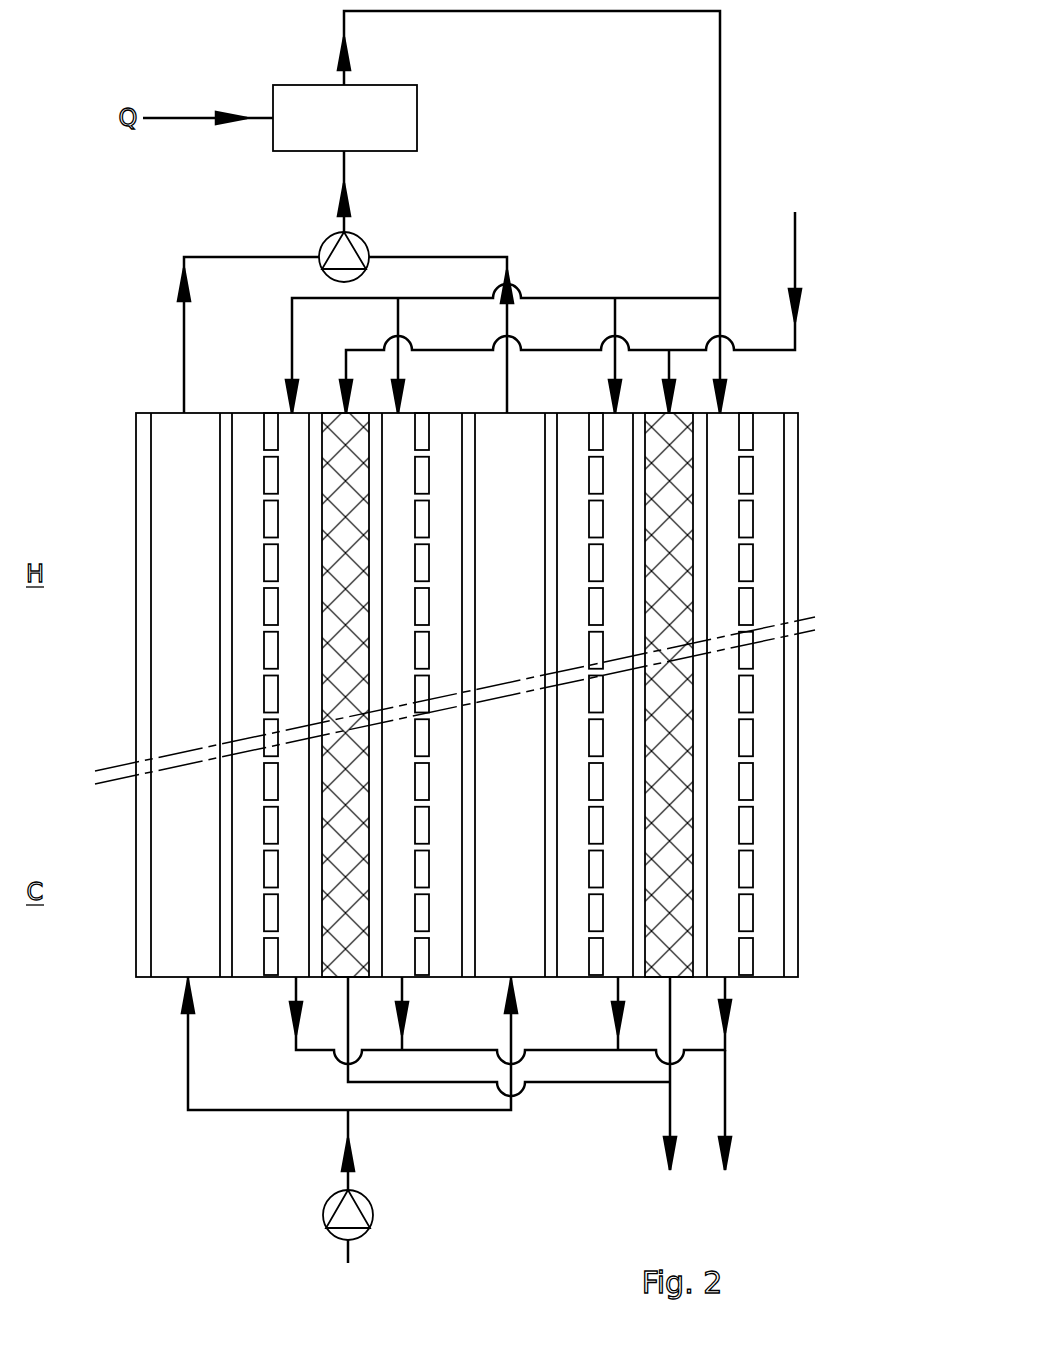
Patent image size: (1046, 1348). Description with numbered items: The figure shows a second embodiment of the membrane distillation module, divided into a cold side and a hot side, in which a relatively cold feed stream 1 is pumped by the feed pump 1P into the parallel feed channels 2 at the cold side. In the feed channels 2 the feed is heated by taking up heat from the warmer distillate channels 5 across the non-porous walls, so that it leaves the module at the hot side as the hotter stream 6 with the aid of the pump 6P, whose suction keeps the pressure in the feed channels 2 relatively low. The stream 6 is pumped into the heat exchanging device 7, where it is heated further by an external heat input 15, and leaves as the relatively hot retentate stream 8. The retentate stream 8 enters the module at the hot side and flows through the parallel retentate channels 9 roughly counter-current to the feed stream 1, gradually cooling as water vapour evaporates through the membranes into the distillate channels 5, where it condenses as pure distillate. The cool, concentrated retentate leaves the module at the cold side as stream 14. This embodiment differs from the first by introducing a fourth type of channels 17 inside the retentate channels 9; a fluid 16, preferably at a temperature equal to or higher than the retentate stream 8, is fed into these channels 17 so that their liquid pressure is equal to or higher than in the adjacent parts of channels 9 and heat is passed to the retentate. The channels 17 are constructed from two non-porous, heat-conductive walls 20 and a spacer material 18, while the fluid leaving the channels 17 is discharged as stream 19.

The feed stream 1 is at (185, 1025).
The feed pump 1P is at (331, 1194).
The feed channels 2 is at (181, 903).
The distillate channels 5 is at (243, 903).
The heated feed stream 6 is at (178, 337).
The pump 6P is at (327, 236).
The heat exchanging device 7 is at (337, 138).
The retentate stream 8 is at (724, 118).
The retentate channels 9 is at (290, 903).
The concentrated retentate stream 14 is at (728, 1122).
The external heat input 15 is at (190, 118).
The fluid 16 is at (799, 248).
The fourth type of channels 17 is at (367, 459).
The spacer material 18 is at (345, 848).
The permeate outlet 19 is at (668, 1122).
The non-porous heat-conductive walls 20 is at (318, 979).